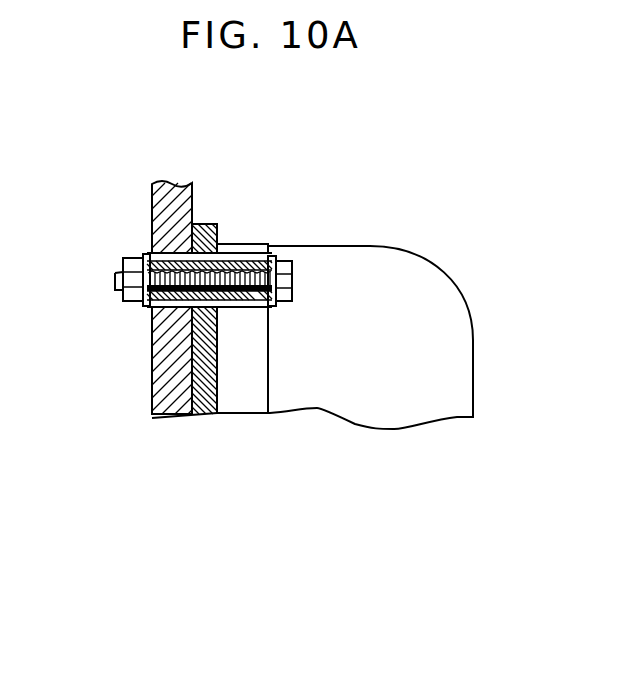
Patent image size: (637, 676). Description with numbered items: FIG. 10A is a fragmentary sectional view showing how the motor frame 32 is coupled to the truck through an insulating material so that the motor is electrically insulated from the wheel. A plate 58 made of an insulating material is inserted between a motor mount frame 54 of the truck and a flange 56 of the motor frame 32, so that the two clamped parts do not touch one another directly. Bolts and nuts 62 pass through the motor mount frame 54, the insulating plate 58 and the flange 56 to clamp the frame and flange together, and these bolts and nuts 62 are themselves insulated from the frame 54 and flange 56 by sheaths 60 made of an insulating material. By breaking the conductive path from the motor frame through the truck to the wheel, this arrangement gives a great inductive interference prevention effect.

The motor frame 32 is at (458, 295).
The motor mount frame 54 is at (172, 192).
The flange 56 is at (247, 247).
The plate 58 is at (205, 223).
The sheaths 60 is at (147, 308).
The bolts and nuts 62 is at (120, 283).